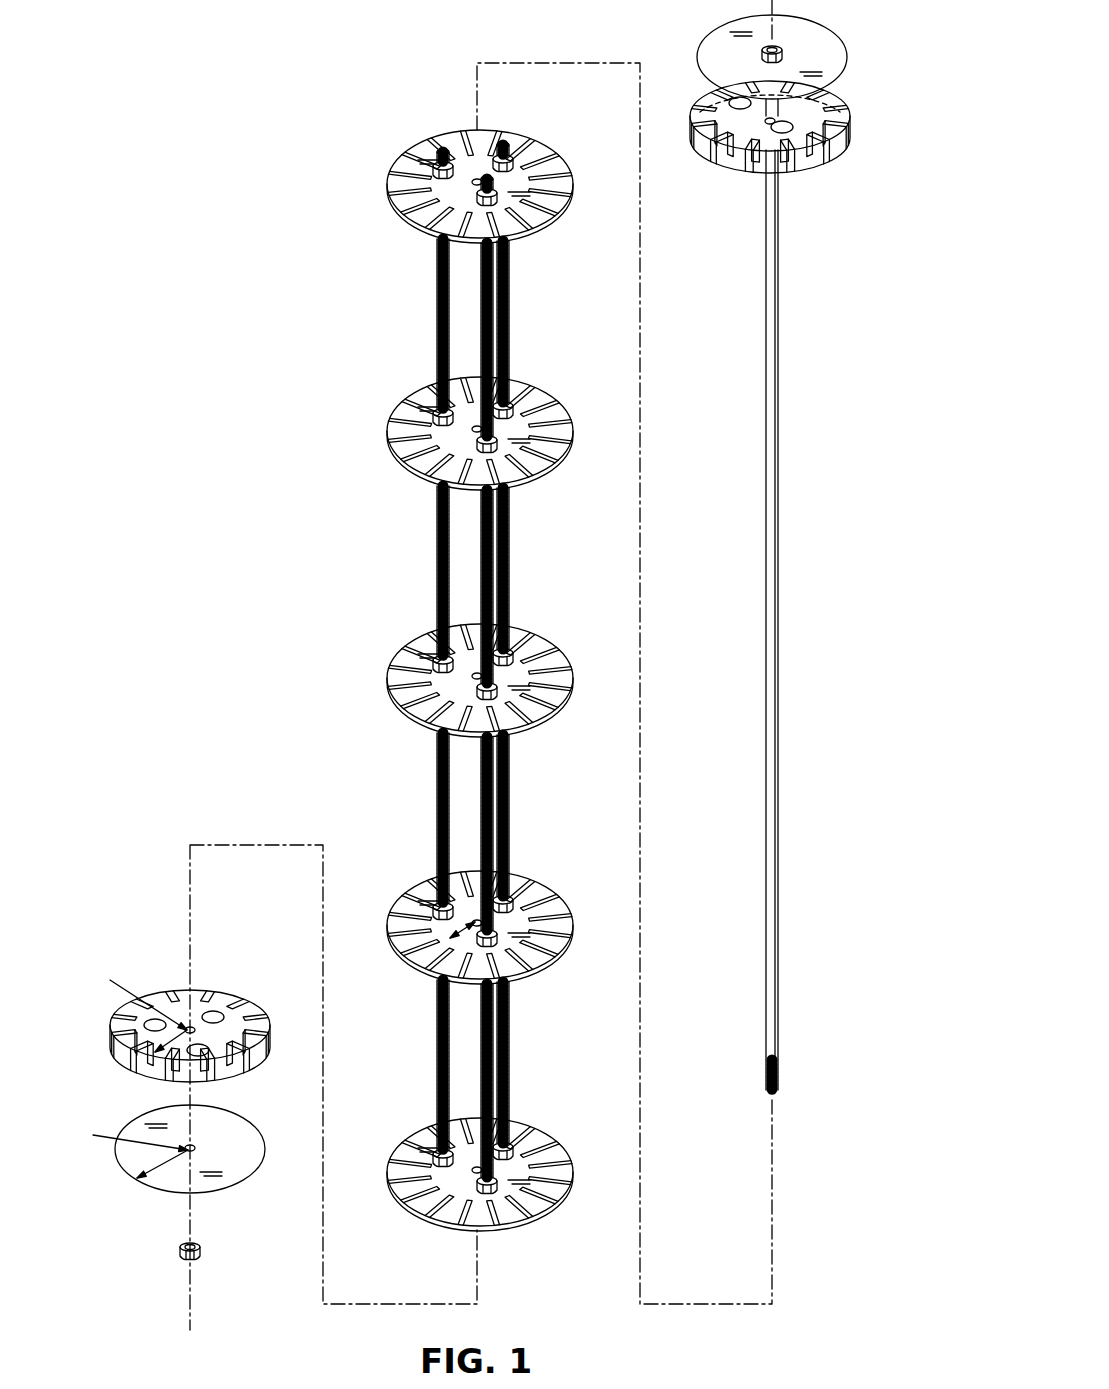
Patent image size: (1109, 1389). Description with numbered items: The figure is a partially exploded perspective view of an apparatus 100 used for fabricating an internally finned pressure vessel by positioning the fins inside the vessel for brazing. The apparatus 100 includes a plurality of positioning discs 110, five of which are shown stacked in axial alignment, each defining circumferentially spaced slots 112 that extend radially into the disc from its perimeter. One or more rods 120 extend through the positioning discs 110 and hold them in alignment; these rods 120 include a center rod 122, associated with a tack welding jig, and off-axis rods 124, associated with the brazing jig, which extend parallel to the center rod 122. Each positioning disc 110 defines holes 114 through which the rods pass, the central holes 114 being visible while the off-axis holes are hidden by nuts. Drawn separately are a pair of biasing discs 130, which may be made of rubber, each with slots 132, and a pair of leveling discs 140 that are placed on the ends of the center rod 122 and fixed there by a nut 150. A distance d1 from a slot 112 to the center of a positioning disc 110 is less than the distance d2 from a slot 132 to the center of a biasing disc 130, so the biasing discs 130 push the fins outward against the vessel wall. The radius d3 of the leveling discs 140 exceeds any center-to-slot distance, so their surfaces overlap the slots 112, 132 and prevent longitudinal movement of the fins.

The apparatus 100 is at (207, 79).
The positioning disc 110 is at (405, 403).
The slot 112 is at (392, 178).
The hole 114 is at (473, 432).
The rod 120 is at (870, 508).
The center rod 122 is at (780, 535).
The off-axis rod 124 is at (508, 533).
The biasing disc 130 is at (825, 148).
The slot 132 is at (848, 125).
The leveling disc 140 is at (827, 52).
The nut 150 is at (782, 50).
The distance d1 is at (452, 936).
The distance d2 is at (133, 1009).
The radius d3 is at (124, 1151).